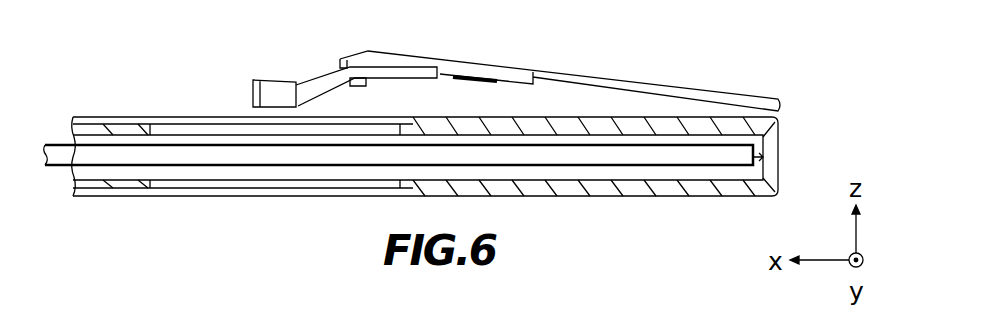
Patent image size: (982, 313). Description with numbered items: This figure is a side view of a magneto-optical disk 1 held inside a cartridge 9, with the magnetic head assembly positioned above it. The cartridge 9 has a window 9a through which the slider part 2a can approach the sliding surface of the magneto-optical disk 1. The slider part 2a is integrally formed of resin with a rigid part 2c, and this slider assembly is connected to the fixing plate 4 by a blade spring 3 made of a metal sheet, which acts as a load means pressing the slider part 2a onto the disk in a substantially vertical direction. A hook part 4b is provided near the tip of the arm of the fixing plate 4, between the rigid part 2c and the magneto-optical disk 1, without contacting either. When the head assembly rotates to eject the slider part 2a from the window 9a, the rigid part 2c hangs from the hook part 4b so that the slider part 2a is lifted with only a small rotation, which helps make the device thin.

The magneto-optical disk 1 is at (712, 170).
The slider part 2a is at (267, 80).
The rigid part 2c is at (343, 57).
The blade spring 3 is at (478, 76).
The fixing plate 4 is at (684, 73).
The hook part 4b is at (368, 85).
The cartridge 9 is at (778, 139).
The window 9a is at (165, 113).